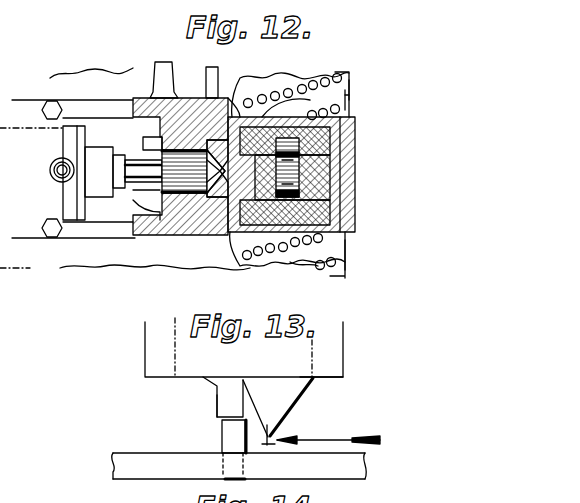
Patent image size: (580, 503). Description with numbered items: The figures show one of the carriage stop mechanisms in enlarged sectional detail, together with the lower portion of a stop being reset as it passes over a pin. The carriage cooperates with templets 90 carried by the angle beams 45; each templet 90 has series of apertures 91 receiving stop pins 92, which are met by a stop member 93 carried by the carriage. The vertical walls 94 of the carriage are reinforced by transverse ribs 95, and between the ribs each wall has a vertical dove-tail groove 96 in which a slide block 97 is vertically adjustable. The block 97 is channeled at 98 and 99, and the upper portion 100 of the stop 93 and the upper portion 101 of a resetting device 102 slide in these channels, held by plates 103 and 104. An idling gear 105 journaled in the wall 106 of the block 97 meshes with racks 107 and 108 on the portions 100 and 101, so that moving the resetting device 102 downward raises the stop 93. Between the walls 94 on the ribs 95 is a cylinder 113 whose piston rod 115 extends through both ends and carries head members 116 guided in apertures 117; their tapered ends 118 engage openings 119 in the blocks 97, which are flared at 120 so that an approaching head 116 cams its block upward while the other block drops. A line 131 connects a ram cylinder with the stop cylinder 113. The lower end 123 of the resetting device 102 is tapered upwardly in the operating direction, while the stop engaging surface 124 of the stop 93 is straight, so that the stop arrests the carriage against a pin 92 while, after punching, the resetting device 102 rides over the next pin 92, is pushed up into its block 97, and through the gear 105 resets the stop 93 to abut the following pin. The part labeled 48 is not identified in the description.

In FIG. 12, the angle beams 45 is at (393, 6).
In FIG. 12, the supporting plate 48 is at (133, 68).
In FIG. 12, the templet 90 is at (355, 87).
In FIG. 13, the templet 90 is at (130, 462).
In FIG. 12, the apertures 91 is at (350, 72).
In FIG. 13, the apertures 91 is at (222, 473).
In FIG. 13, the stop pins 92 is at (223, 442).
In FIG. 13, the stop member 93 is at (216, 408).
In FIG. 12, the vertical walls 94 is at (236, 85).
In FIG. 12, the transverse ribs 95 is at (97, 107).
In FIG. 12, the dove-tail groove 96 is at (200, 110).
In FIG. 12, the slide block 97 is at (203, 212).
In FIG. 12, the channel 98 is at (338, 148).
In FIG. 12, the channel 99 is at (318, 188).
In FIG. 12, the upper portion of the stop 100 is at (325, 212).
In FIG. 12, the upper portion of the resetting device 101 is at (330, 118).
In FIG. 13, the resetting device 102 is at (268, 400).
In FIG. 12, the plate 103 is at (335, 245).
In FIG. 13, the plate 103 is at (150, 355).
In FIG. 12, the plate 104 is at (348, 73).
In FIG. 13, the plate 104 is at (322, 370).
In FIG. 12, the idling gear 105 is at (300, 165).
In FIG. 12, the wall of the block 106 is at (320, 178).
In FIG. 12, the rack 107 is at (300, 268).
In FIG. 12, the rack 108 is at (349, 97).
In FIG. 12, the cylinder 113 is at (52, 158).
In FIG. 12, the piston rod 115 is at (137, 198).
In FIG. 12, the head member 116 is at (177, 182).
In FIG. 12, the aperture 117 is at (150, 192).
In FIG. 12, the tapered end 118 is at (135, 158).
In FIG. 12, the opening 119 is at (240, 116).
In FIG. 12, the flared portion 120 is at (185, 140).
In FIG. 13, the lower end of the resetting member 123 is at (252, 433).
In FIG. 13, the stop engaging surface 124 is at (211, 390).
In FIG. 12, the line 131 is at (60, 183).